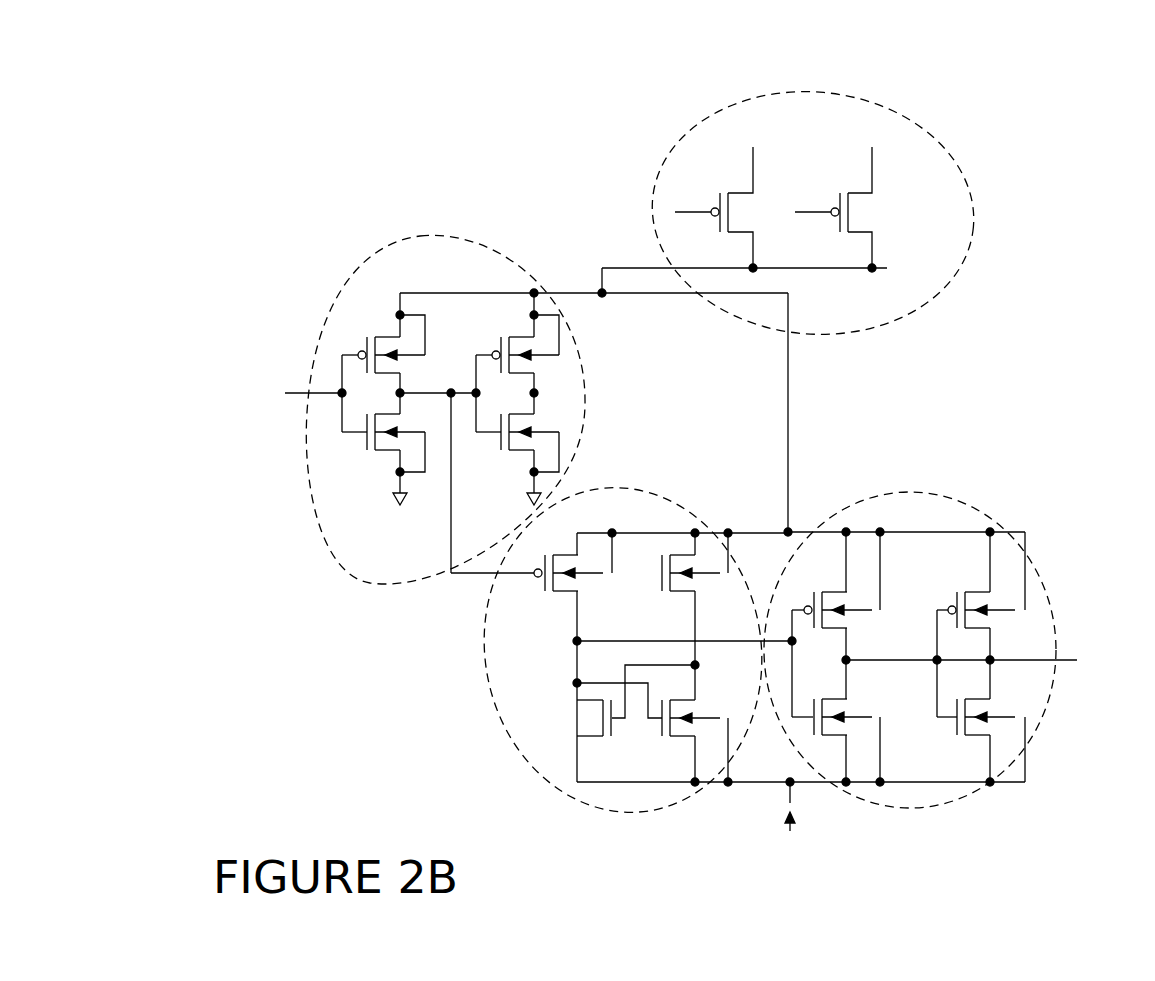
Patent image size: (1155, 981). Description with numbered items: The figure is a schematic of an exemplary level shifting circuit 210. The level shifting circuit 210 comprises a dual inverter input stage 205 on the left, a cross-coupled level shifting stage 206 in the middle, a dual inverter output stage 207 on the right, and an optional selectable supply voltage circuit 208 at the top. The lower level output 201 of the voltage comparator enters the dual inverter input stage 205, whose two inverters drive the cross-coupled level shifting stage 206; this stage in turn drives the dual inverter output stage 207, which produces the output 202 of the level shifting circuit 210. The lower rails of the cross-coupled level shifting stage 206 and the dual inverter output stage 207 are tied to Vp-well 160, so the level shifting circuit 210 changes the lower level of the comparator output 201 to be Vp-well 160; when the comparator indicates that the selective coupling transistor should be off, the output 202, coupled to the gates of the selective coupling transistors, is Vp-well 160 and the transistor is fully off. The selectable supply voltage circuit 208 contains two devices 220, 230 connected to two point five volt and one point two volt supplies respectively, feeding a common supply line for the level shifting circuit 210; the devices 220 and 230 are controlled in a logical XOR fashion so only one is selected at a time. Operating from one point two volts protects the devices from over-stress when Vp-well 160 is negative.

The level shifting circuit 210 is at (205, 78).
The dual inverter input stage 205 is at (385, 253).
The lower level output 201 is at (293, 393).
The device 220 is at (743, 215).
The device 230 is at (865, 215).
The selectable supply voltage circuit 208 is at (962, 253).
The cross-coupled level shifting stage 206 is at (488, 662).
The dual inverter output stage 207 is at (1015, 512).
The output 202 is at (1060, 662).
The Vp-well 160 is at (789, 830).